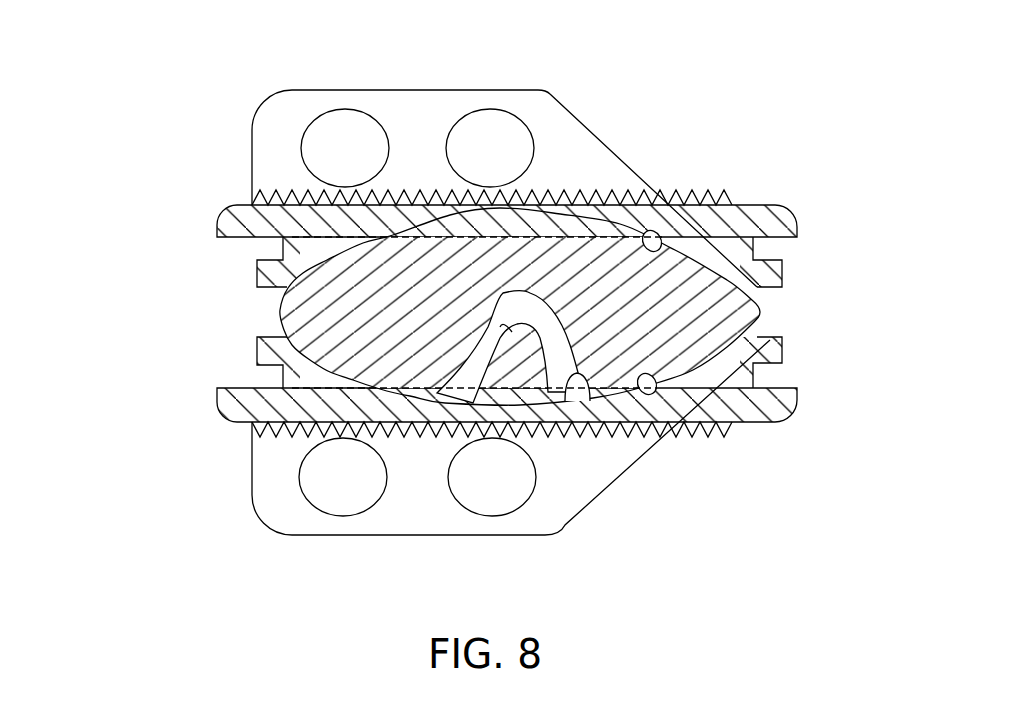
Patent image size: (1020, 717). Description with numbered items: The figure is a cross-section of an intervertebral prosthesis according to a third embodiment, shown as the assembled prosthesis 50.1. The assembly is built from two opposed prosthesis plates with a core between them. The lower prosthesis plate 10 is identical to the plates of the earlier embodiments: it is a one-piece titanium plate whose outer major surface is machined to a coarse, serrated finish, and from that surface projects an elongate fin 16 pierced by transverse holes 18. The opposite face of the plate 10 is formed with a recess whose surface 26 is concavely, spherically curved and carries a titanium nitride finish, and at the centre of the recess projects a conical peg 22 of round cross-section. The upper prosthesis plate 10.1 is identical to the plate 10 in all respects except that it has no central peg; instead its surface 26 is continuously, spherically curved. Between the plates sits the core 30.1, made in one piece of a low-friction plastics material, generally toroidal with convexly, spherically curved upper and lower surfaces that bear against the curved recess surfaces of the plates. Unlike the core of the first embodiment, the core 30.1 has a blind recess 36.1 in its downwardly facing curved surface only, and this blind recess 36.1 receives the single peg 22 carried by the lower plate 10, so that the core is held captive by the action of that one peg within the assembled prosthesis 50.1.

The prosthesis plate 10 is at (752, 464).
The upper prosthesis plate 10.1 is at (771, 152).
The elongate fin 16 is at (587, 140).
The transverse holes 18 is at (494, 126).
The conical peg 22 is at (498, 300).
The surface of the recess 26 is at (647, 230).
The core 30.1 is at (791, 314).
The blind recess 36.1 is at (557, 392).
The assembled prosthesis 50.1 is at (203, 82).